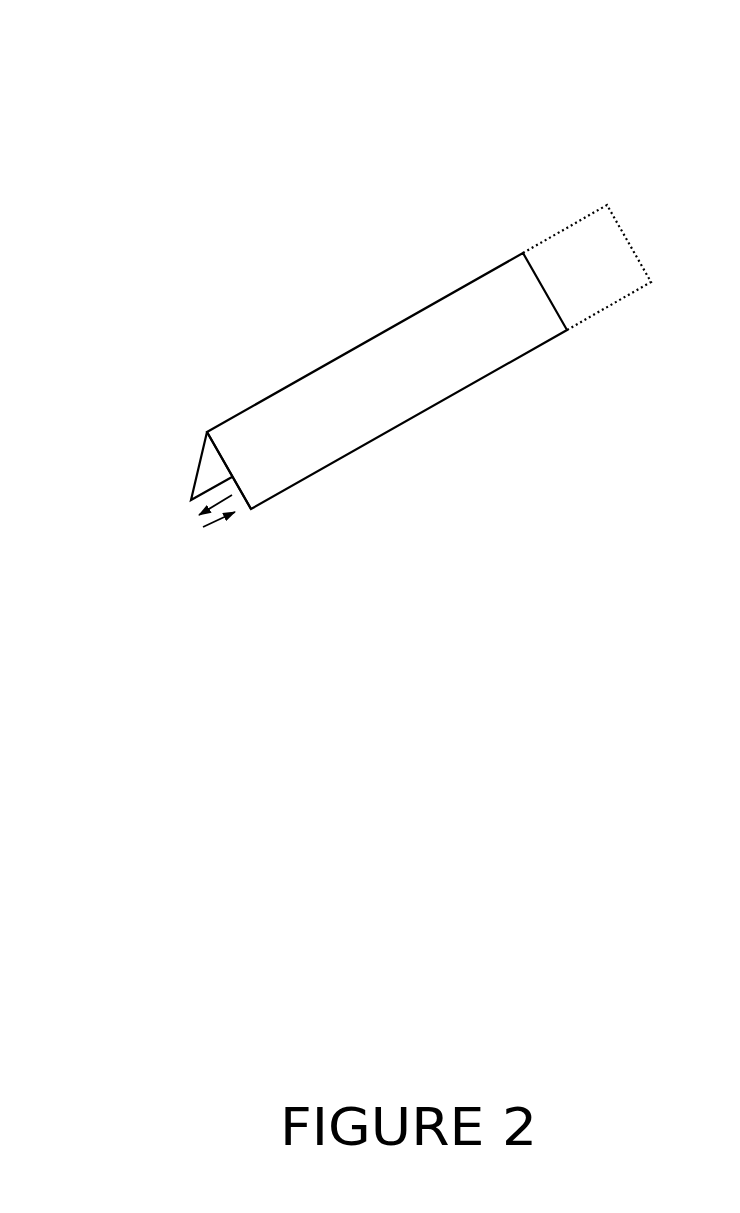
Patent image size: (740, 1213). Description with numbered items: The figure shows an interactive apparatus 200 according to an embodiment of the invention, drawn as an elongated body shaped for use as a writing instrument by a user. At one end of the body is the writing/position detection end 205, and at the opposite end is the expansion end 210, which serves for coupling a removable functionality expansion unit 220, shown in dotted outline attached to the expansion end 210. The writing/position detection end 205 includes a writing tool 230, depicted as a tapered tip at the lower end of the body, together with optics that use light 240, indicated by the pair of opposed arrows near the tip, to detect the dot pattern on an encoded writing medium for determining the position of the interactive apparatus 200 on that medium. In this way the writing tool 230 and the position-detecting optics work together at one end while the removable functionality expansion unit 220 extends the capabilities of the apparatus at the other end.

The interactive apparatus 200 is at (68, 36).
The writing/position detection end 205 is at (207, 430).
The expansion end 210 is at (523, 252).
The removable functionality expansion unit 220 is at (602, 283).
The writing tool 230 is at (197, 467).
The light 240 is at (192, 525).